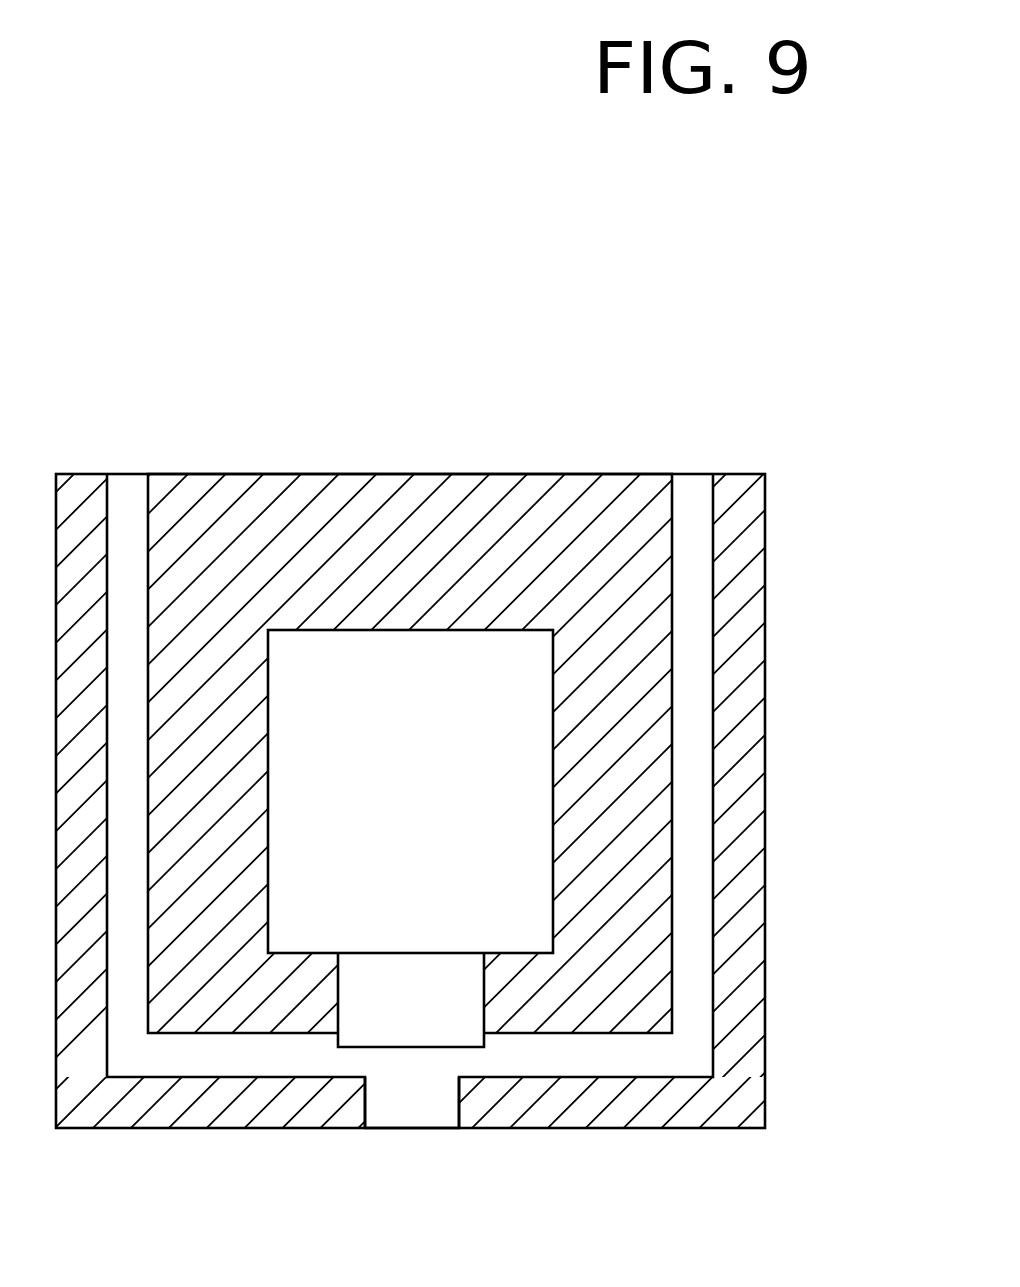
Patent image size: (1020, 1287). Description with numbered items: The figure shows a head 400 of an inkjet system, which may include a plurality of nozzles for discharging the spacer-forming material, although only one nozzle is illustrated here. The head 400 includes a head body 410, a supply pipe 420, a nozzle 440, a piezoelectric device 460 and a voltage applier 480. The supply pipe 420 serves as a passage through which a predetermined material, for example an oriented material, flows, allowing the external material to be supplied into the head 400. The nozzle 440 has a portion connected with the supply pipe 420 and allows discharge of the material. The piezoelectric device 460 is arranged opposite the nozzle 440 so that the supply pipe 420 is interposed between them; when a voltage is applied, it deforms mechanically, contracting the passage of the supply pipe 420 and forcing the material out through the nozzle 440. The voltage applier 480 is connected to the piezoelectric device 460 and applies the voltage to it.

The head 400 is at (662, 424).
The head body 410 is at (405, 497).
The supply pipe 420 is at (124, 492).
The nozzle 440 is at (412, 1108).
The piezoelectric device 460 is at (458, 995).
The voltage applier 480 is at (525, 795).